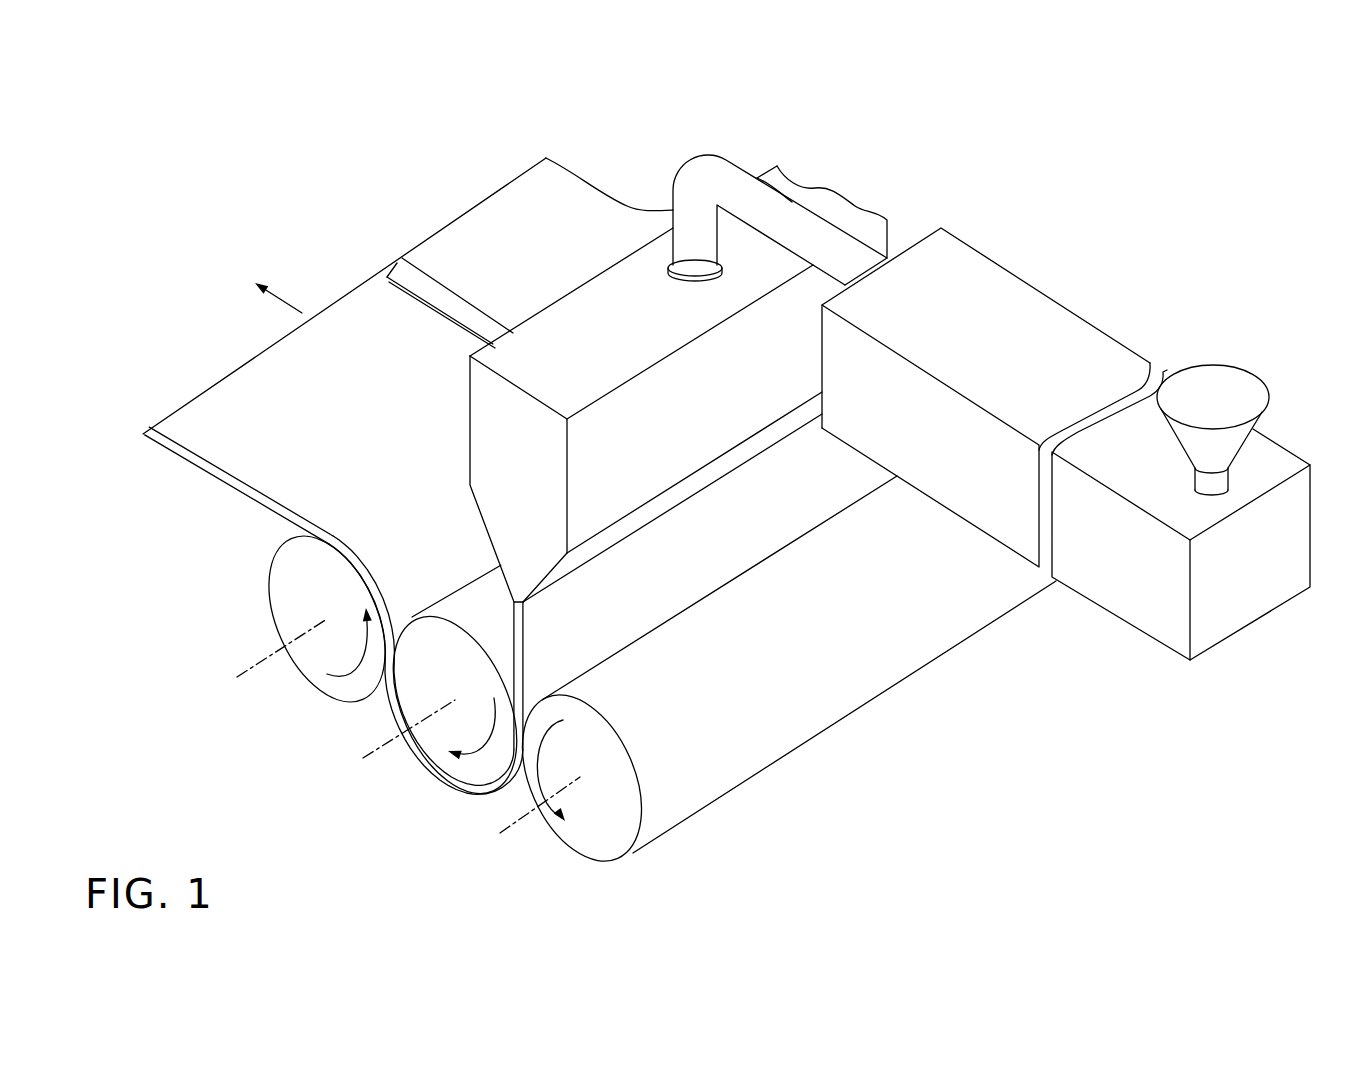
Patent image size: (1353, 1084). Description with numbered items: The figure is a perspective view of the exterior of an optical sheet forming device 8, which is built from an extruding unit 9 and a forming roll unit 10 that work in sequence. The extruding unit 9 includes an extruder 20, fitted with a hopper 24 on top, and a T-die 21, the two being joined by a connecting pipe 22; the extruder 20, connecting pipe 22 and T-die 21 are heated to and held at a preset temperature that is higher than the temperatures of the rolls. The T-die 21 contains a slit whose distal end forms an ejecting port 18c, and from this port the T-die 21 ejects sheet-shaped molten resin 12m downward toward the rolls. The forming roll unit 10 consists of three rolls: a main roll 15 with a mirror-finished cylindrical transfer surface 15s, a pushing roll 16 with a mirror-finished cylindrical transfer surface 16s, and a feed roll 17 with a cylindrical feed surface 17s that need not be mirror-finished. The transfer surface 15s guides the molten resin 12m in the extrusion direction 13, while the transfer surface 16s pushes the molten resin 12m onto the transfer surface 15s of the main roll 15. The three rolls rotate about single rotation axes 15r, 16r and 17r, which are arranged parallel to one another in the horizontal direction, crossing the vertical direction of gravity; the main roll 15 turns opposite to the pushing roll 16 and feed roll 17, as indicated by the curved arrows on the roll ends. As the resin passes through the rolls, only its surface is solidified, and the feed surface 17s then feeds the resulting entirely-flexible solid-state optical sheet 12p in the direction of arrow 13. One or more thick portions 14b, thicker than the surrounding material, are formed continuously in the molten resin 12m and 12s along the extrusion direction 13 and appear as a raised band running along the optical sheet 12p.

The optical sheet forming device 8 is at (903, 128).
The extruding unit 9 is at (1032, 121).
The forming roll unit 10 is at (441, 926).
The optical sheet 12p is at (183, 456).
The sheet-shaped molten resin 12m is at (524, 642).
The molten resin 12s is at (500, 742).
The extrusion direction 13 is at (283, 303).
The thick portion 14b is at (465, 296).
The main roll 15 is at (416, 749).
The transfer surface 15s is at (481, 587).
The rotation axis 15r is at (394, 737).
The pushing roll 16 is at (587, 861).
The transfer surface 16s is at (876, 696).
The rotation axis 16r is at (522, 818).
The feed roll 17 is at (303, 676).
The feed surface 17s is at (278, 562).
The rotation axis 17r is at (266, 654).
The ejecting port 18c is at (716, 491).
The extruder 20 is at (1013, 268).
The T-die 21 is at (878, 201).
The connecting pipe 22 is at (793, 200).
The hopper 24 is at (1222, 362).